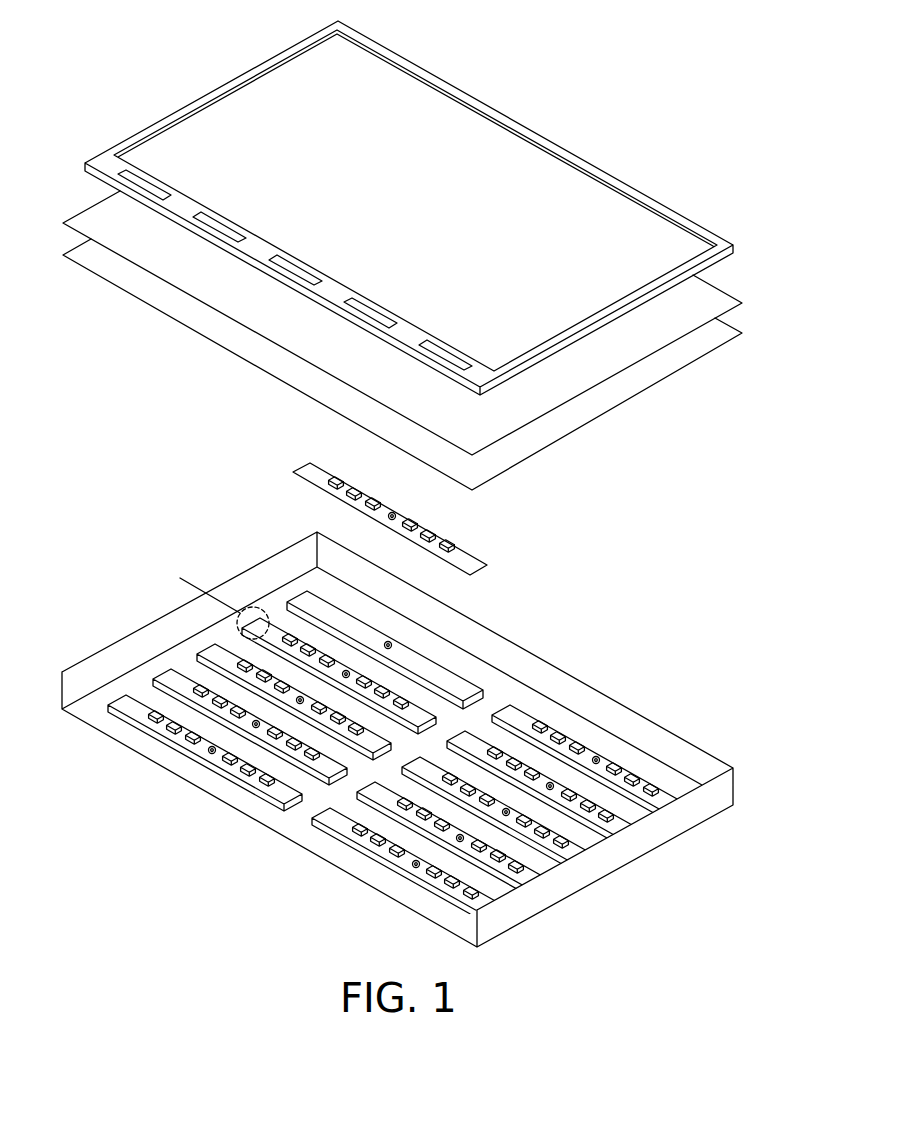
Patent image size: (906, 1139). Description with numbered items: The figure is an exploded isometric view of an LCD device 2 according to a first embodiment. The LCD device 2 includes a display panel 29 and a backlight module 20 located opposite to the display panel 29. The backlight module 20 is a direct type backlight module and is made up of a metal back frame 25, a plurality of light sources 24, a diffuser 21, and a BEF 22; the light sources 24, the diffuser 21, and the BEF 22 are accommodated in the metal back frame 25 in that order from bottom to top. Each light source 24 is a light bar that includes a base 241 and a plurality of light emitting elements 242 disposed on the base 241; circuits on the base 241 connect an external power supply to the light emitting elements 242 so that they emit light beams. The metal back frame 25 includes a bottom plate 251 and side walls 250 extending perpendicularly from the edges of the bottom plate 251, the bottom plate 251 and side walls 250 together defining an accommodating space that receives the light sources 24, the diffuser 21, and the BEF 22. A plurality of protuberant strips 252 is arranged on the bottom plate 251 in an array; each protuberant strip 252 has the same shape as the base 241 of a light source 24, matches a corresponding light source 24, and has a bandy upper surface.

The LCD device 2 is at (438, 30).
The backlight module 20 is at (742, 282).
The display panel 29 is at (587, 188).
The BEF 22 is at (597, 357).
The diffuser 21 is at (568, 422).
The light source 24 is at (446, 524).
The base 241 is at (460, 558).
The light emitting element 242 is at (440, 554).
The metal back frame 25 is at (556, 679).
The side wall 250 is at (643, 838).
The bottom plate 251 is at (585, 734).
The protuberant strip 252 is at (455, 685).